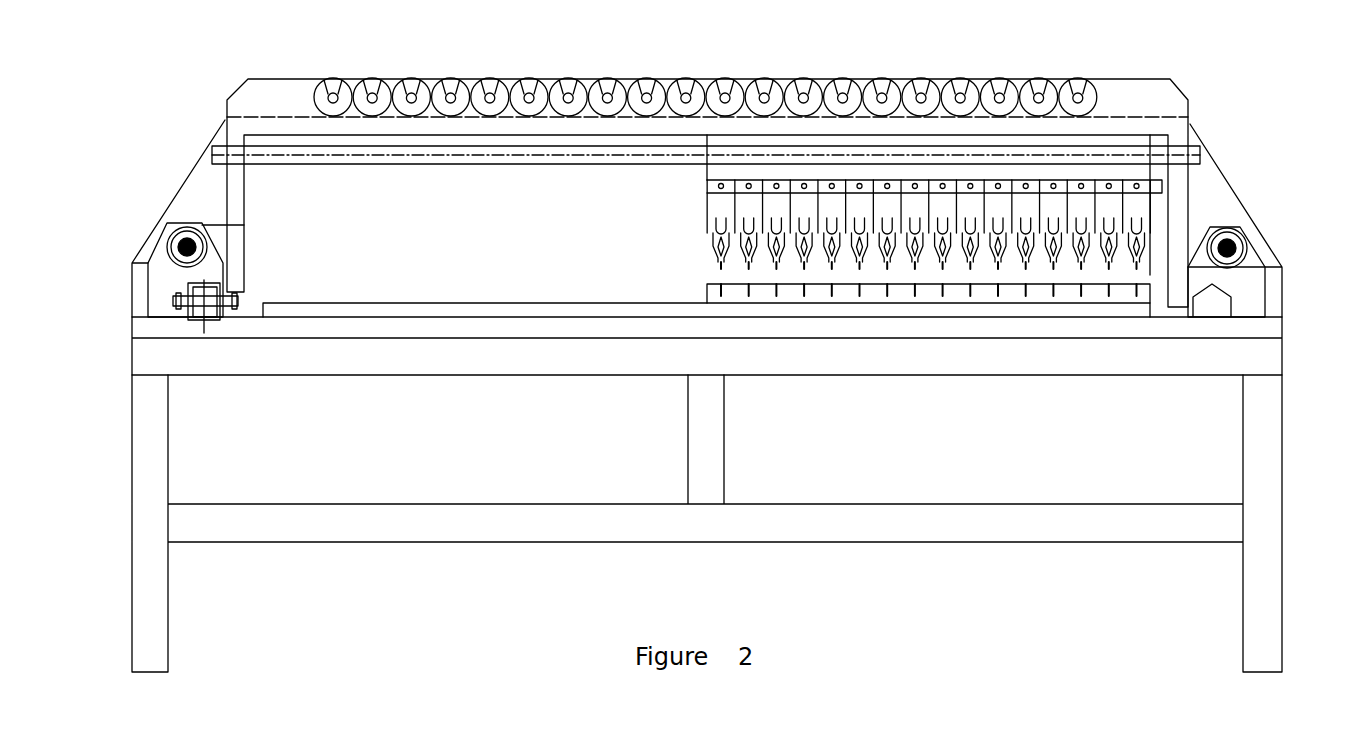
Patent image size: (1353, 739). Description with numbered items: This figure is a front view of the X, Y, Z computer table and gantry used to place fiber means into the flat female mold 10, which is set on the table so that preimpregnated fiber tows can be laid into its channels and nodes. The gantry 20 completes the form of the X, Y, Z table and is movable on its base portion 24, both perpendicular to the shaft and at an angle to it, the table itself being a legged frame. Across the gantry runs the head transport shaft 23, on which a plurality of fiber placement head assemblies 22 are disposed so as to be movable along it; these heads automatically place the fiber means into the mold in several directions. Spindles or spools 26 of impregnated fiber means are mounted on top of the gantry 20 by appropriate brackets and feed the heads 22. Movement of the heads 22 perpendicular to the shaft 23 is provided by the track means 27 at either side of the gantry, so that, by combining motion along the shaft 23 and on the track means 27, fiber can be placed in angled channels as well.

The flat female mold 10 is at (703, 292).
The gantry 20 is at (1148, 110).
The fiber placement head assemblies 22 is at (708, 204).
The head transport shaft 23 is at (380, 160).
The base portion 24 is at (795, 365).
The spools 26 is at (1075, 82).
The track means 27 is at (185, 270).